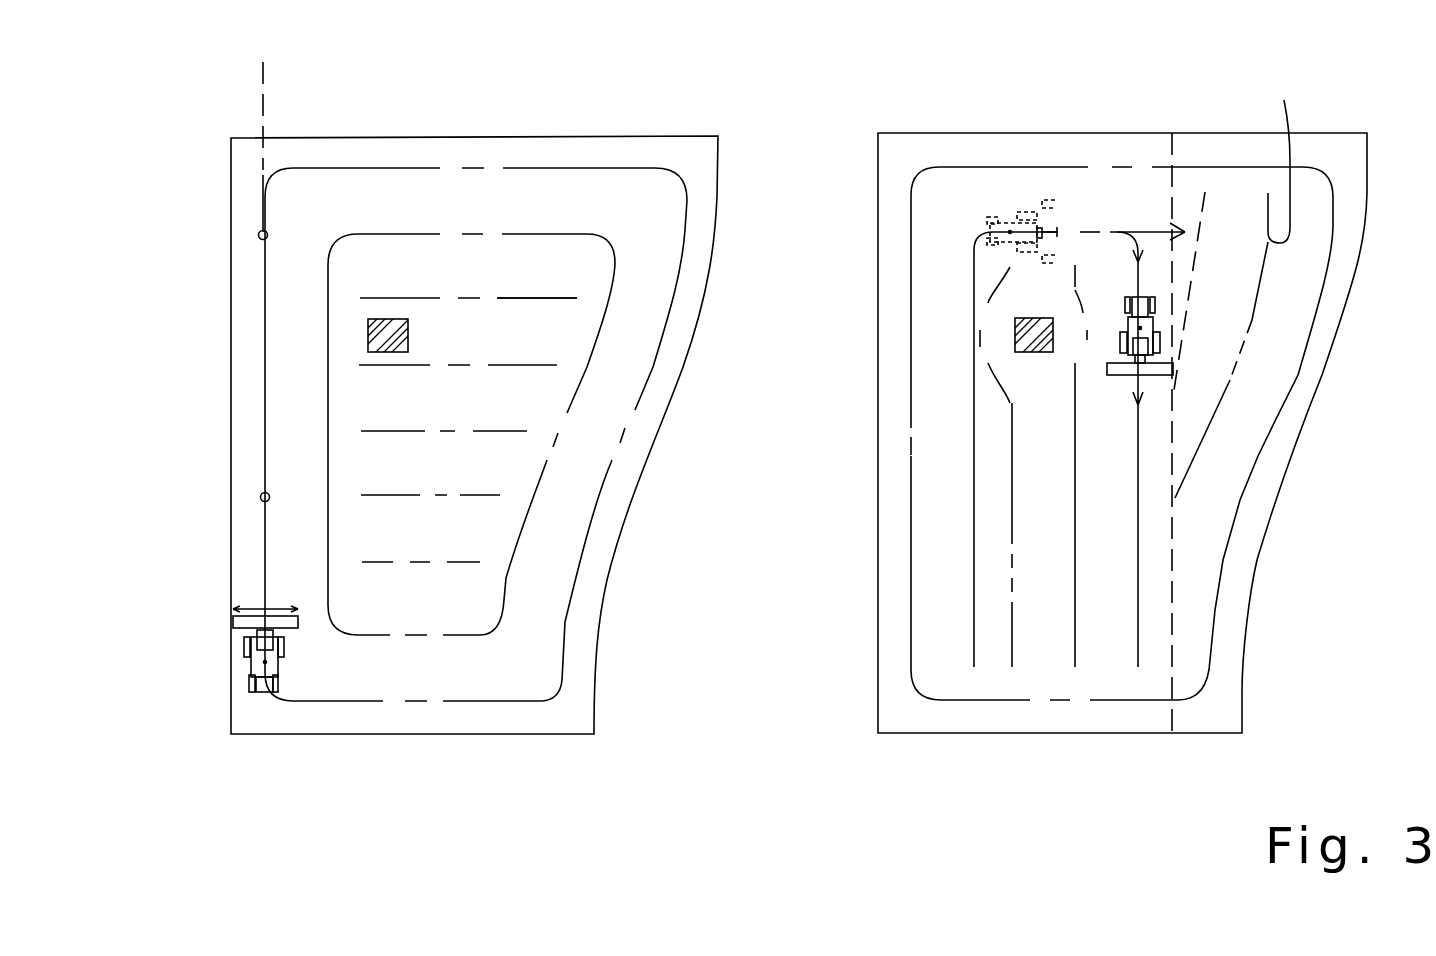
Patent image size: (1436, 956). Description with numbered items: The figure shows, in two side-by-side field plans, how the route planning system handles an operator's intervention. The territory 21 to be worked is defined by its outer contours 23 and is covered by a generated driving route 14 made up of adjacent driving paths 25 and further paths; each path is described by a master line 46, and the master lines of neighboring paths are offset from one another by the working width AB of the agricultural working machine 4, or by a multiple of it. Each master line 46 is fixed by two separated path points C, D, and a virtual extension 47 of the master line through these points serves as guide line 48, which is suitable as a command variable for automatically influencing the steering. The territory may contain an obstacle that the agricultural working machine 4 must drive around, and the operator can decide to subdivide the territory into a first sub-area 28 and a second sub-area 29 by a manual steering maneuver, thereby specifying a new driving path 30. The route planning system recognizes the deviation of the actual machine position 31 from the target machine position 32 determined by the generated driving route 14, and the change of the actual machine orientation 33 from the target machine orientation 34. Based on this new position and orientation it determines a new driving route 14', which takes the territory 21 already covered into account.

The agricultural working machine 4 is at (257, 662).
The driving route 14 is at (468, 430).
The new driving route 14' is at (1140, 437).
The territory to be worked 21 is at (563, 503).
The outer contours 23 is at (603, 136).
The driving path 25 is at (253, 327).
The first sub-area 28 is at (1203, 572).
The second sub-area 29 is at (940, 655).
The new driving path 30 is at (1133, 232).
The actual machine position 31 is at (1170, 328).
The target machine position 32 is at (1018, 186).
The actual machine orientation 33 is at (1142, 387).
The target machine orientation 34 is at (1153, 232).
The master line 46 is at (263, 446).
The virtual extension 47 is at (325, 116).
The guide line 48 is at (265, 118).
The path point D is at (258, 235).
The path point C is at (260, 497).
The working width AB is at (252, 608).